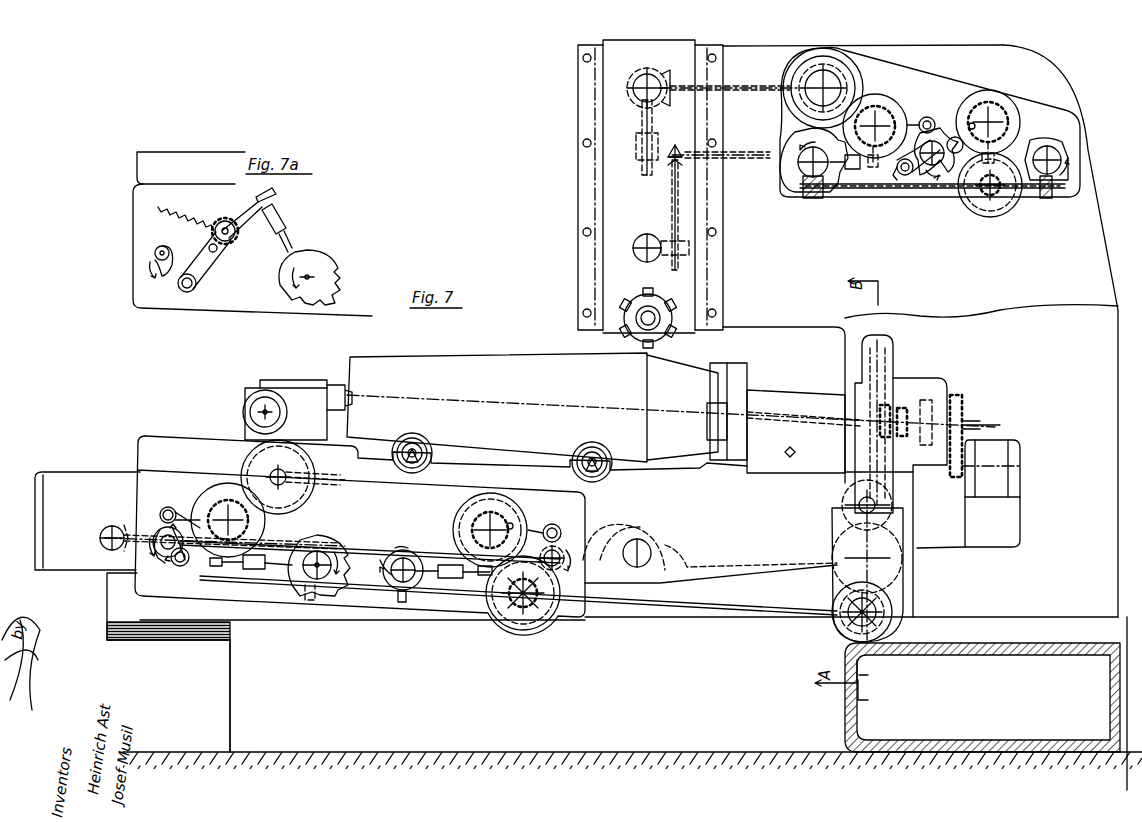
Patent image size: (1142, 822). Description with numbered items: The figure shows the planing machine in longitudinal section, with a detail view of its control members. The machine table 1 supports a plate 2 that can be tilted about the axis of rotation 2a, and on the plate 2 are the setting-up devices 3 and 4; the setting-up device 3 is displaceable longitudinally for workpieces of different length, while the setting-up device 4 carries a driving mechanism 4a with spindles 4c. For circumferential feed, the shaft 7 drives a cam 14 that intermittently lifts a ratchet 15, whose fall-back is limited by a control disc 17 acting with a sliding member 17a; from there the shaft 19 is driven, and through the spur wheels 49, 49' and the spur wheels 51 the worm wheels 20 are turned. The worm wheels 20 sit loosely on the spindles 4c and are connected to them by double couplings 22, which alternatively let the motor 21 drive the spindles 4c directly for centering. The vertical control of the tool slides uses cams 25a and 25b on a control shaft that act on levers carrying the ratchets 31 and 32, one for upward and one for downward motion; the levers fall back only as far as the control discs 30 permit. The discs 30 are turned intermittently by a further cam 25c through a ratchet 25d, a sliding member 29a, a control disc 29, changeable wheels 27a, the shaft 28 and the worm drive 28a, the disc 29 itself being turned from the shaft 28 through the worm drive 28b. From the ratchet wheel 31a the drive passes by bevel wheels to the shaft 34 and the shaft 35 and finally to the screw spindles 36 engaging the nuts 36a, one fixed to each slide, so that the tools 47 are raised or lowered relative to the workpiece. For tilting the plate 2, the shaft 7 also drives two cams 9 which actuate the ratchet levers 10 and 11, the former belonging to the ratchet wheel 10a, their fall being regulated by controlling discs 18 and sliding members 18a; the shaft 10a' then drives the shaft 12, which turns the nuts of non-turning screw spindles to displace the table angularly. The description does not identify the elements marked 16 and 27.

In FIG. 7, the planing machine table 1 is at (124, 616).
In FIG. 7, the plate 2 is at (712, 510).
In FIG. 7, the axis of rotation 2a is at (625, 547).
In FIG. 7, the setting-up device 3 is at (290, 400).
In FIG. 7, the setting-up device 4 is at (785, 444).
In FIG. 7, the driving mechanism 4a is at (928, 392).
In FIG. 7, the spindles 4c is at (975, 425).
In FIG. 7, the shaft 7 is at (357, 548).
In FIG. 7A, the cams 9 is at (165, 246).
In FIG. 7, the cams 9 is at (156, 560).
In FIG. 7A, the ratchet lever 10 is at (232, 283).
In FIG. 7, the ratchet lever 10 is at (212, 582).
In FIG. 7A, the ratchet wheel 10a is at (241, 243).
In FIG. 7A, the shaft 10a' is at (200, 207).
In FIG. 7, the ratchet lever 11 is at (182, 512).
In FIG. 7, the shaft 12 is at (262, 478).
In FIG. 7, the cam 14 is at (560, 548).
In FIG. 7, the ratchet 15 is at (551, 520).
In FIG. 7, the cam 16 is at (367, 581).
In FIG. 7, the control disc 17 is at (406, 550).
In FIG. 7, the sliding member 17a is at (469, 576).
In FIG. 7A, the controlling discs 18 is at (318, 240).
In FIG. 7, the controlling discs 18 is at (318, 528).
In FIG. 7, the sliding members 18a is at (270, 570).
In FIG. 7, the shaft 19 is at (697, 605).
In FIG. 7, the worm wheels 20 is at (900, 350).
In FIG. 7, the motor 21 is at (1000, 464).
In FIG. 7, the double couplings 22 is at (890, 430).
In FIG. 7, the cam 25a is at (925, 172).
In FIG. 7, the cam 25b is at (934, 140).
In FIG. 7, the cam 25c is at (990, 199).
In FIG. 7, the ratchet 25d is at (990, 98).
In FIG. 7, the gear 27 is at (1050, 124).
In FIG. 7, the changeable wheels 27a is at (1010, 192).
In FIG. 7, the shaft 28 is at (863, 190).
In FIG. 7, the worm drive 28a is at (815, 200).
In FIG. 7, the worm drive 28b is at (1046, 200).
In FIG. 7, the control disc 29 is at (1060, 160).
In FIG. 7, the sliding member 29a is at (1050, 145).
In FIG. 7, the control discs 30 is at (800, 168).
In FIG. 7, the ratchet 31 is at (898, 181).
In FIG. 7, the ratchet wheel 31a is at (890, 100).
In FIG. 7, the ratchet 32 is at (930, 111).
In FIG. 7, the shaft 34 is at (758, 80).
In FIG. 7, the shaft 35 is at (645, 86).
In FIG. 7, the screw spindles 36 is at (647, 127).
In FIG. 7, the nuts 36a is at (660, 160).
In FIG. 7, the tools 47 is at (645, 297).
In FIG. 7, the spur wheel 49 is at (886, 575).
In FIG. 7, the spur wheel 49' is at (894, 565).
In FIG. 7, the spur wheels 51 is at (895, 505).